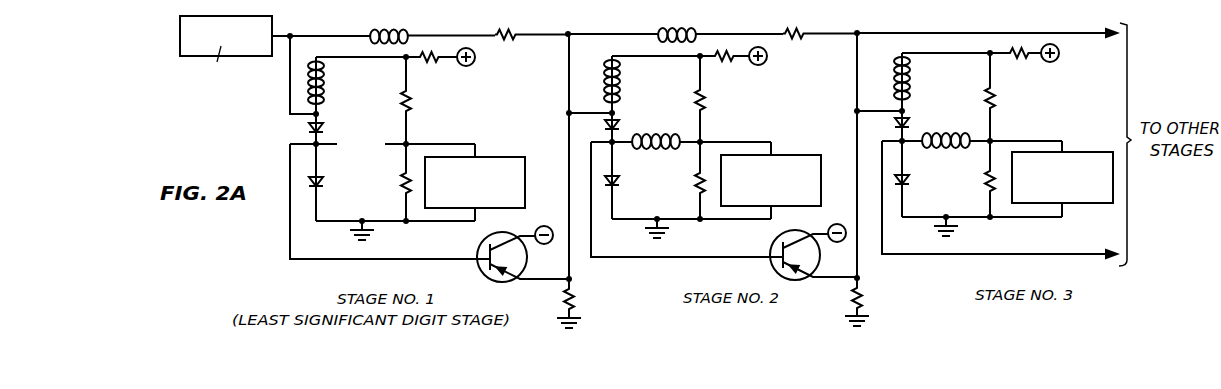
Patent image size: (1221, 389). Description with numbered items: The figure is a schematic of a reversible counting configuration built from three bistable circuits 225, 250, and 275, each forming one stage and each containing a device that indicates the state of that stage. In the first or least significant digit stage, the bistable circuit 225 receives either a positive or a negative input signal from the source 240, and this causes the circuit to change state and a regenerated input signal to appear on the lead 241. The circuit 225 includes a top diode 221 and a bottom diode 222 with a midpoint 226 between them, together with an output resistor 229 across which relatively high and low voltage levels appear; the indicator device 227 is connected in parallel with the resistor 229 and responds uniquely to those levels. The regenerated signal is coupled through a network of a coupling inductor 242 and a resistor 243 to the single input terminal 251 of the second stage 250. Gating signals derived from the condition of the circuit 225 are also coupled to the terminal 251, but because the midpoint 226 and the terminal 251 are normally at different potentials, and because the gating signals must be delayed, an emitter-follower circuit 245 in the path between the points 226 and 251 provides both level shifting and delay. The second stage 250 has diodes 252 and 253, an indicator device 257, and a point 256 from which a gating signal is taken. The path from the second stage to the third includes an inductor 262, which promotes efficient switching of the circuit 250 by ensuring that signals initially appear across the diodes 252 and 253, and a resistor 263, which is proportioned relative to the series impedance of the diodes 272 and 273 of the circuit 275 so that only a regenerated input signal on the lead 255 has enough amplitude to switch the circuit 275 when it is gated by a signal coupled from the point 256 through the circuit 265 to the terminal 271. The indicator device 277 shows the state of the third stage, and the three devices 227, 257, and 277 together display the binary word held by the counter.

The source 240 is at (262, 33).
The lead 241 is at (338, 36).
The coupling inductor 242 is at (406, 36).
The resistor 243 is at (506, 35).
The lead 255 is at (598, 34).
The inductor 262 is at (690, 34).
The resistor 263 is at (795, 33).
The bistable circuit 225 is at (359, 88).
The diode 221 is at (325, 128).
The midpoint 226 is at (314, 143).
The bottom diode 222 is at (325, 185).
The output resistor 229 is at (400, 186).
The indicator device 227 is at (490, 158).
The emitter-follower circuit 245 is at (523, 254).
The input terminal 251 is at (567, 112).
The bistable circuit 250 is at (685, 80).
The diode 252 is at (622, 128).
The point 256 is at (616, 147).
The bottom diode 253 is at (623, 180).
The indicator device 257 is at (793, 157).
The circuit 265 is at (813, 252).
The bistable circuit 275 is at (976, 77).
The terminal 271 is at (856, 110).
The diode 272 is at (912, 127).
The bottom diode 273 is at (912, 180).
The indicator device 277 is at (1093, 152).